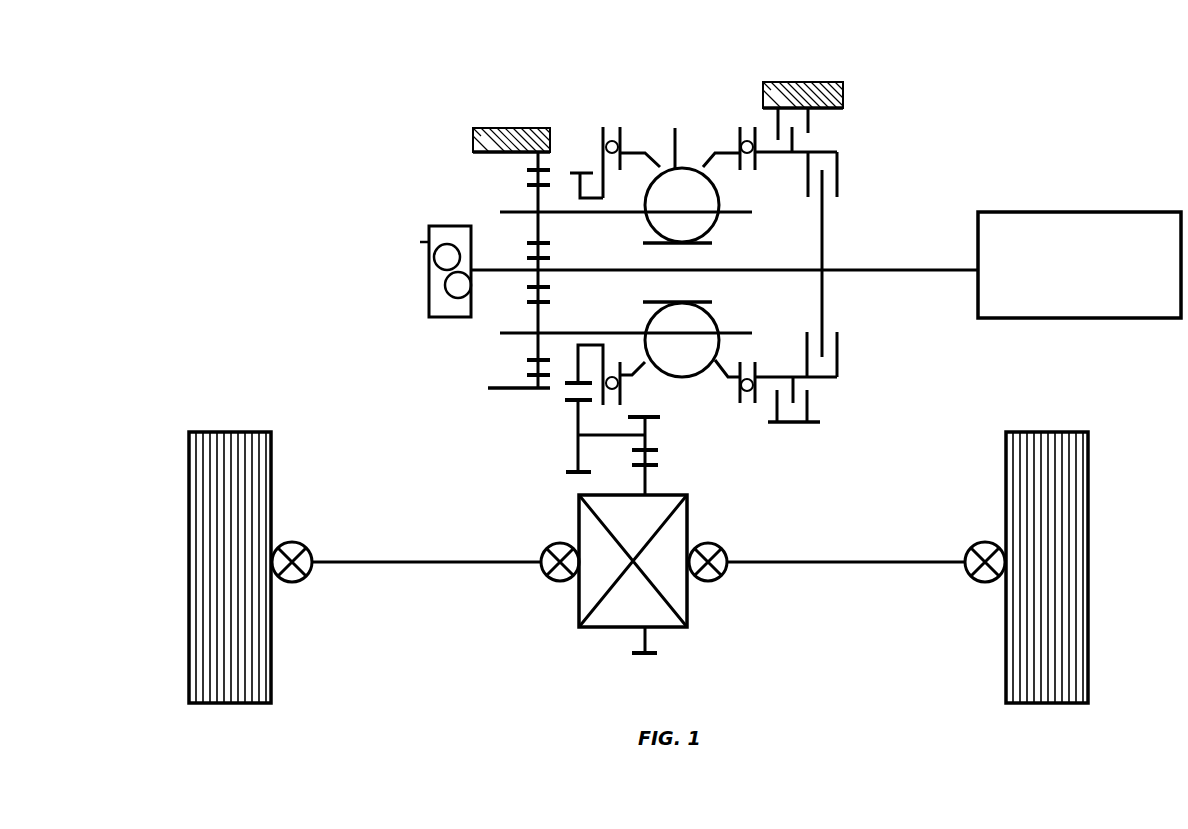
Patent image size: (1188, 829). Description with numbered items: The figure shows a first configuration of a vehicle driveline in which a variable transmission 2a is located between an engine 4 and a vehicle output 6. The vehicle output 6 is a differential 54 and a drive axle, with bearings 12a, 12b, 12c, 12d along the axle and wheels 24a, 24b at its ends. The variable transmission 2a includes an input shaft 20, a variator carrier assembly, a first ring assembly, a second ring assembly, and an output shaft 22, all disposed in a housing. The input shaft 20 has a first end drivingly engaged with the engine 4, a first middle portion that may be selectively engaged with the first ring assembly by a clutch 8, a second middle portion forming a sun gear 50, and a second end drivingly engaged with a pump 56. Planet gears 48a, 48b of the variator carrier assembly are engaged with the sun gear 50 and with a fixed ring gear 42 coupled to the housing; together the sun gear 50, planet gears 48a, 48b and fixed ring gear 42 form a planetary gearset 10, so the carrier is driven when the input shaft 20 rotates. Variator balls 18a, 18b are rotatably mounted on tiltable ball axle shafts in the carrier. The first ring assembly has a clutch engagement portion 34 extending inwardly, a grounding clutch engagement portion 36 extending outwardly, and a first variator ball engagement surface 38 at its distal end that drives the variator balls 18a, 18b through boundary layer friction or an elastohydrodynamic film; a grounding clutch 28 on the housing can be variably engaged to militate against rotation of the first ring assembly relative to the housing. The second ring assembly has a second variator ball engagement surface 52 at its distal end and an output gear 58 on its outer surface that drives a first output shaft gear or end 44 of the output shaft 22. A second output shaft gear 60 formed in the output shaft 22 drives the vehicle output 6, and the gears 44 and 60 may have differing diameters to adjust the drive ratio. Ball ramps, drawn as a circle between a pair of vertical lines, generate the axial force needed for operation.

The variable transmission 2a is at (690, 50).
The engine 4 is at (1140, 212).
The vehicle output 6 is at (628, 675).
The clutch 8 is at (840, 152).
The planetary gearset 10 is at (536, 116).
The bearing 12a is at (296, 582).
The bearing 12b is at (557, 582).
The bearing 12c is at (713, 580).
The bearing 12d is at (985, 582).
The variator ball 18a is at (684, 168).
The variator ball 18b is at (690, 374).
The input shaft 20 is at (880, 270).
The output shaft 22 is at (615, 438).
The wheel 24a is at (240, 432).
The wheel 24b is at (1056, 432).
The grounding clutch 28 is at (808, 70).
The clutch engagement portion 34 is at (838, 182).
The grounding clutch engagement portion 36 is at (793, 147).
The first variator ball engagement surface 38 is at (703, 158).
The fixed ring gear 42 is at (528, 170).
The first output shaft gear or end 44 is at (578, 437).
The planet gear 48a is at (528, 208).
The planet gear 48b is at (537, 320).
The sun gear 50 is at (534, 277).
The second variator ball engagement surface 52 is at (660, 158).
The differential 54 is at (680, 628).
The pump 56 is at (429, 251).
The output gear 58 is at (577, 362).
The second output shaft gear 60 is at (648, 433).